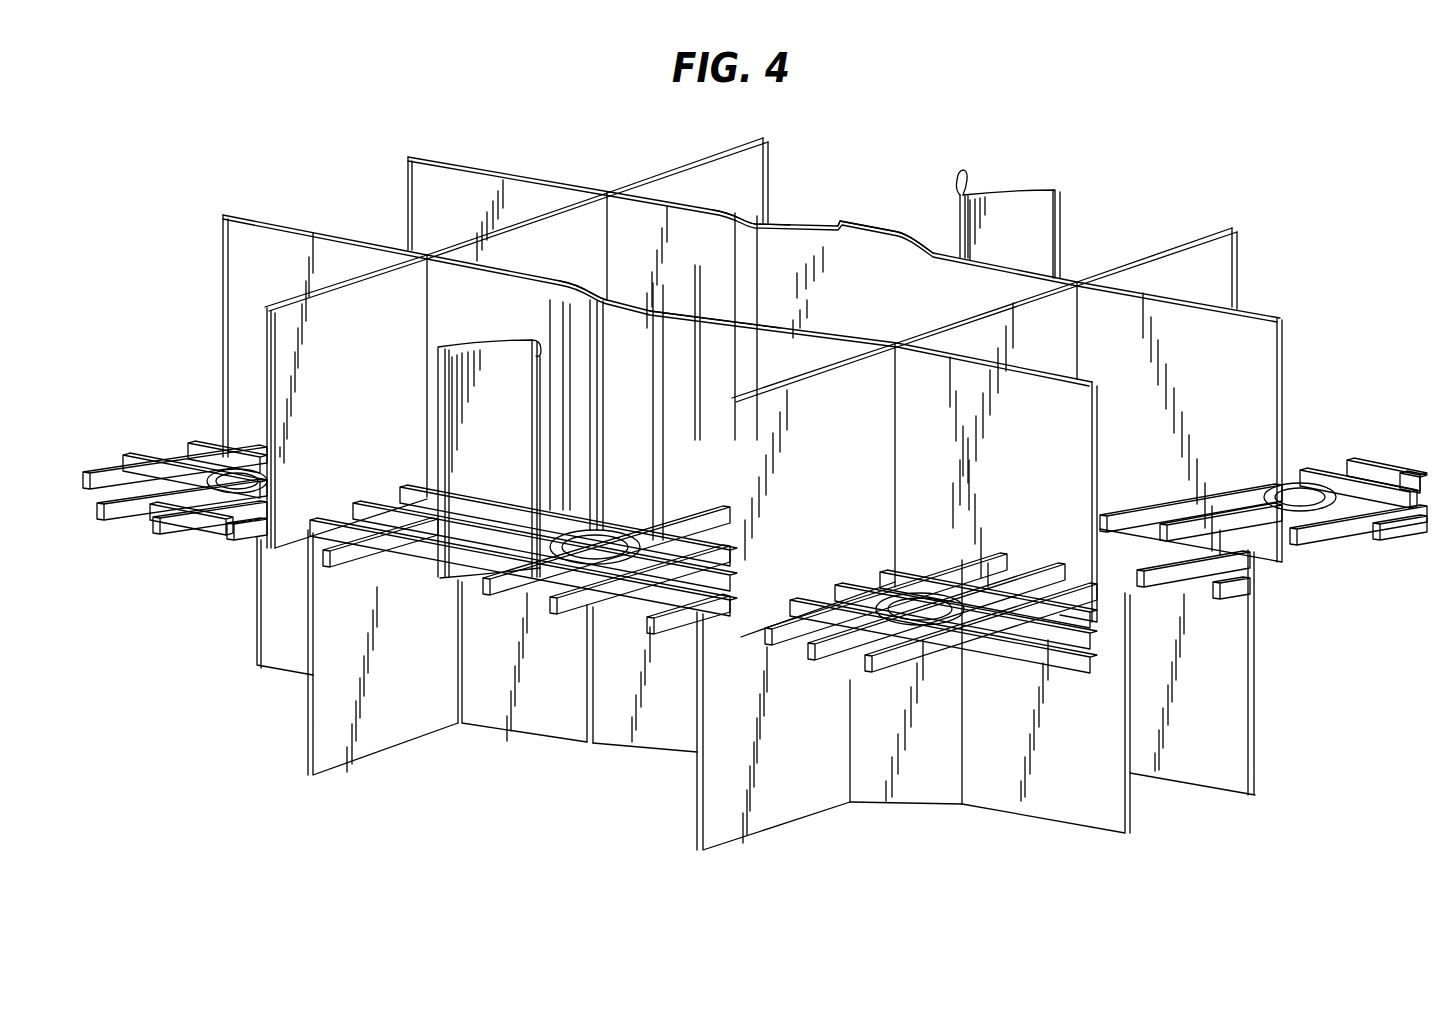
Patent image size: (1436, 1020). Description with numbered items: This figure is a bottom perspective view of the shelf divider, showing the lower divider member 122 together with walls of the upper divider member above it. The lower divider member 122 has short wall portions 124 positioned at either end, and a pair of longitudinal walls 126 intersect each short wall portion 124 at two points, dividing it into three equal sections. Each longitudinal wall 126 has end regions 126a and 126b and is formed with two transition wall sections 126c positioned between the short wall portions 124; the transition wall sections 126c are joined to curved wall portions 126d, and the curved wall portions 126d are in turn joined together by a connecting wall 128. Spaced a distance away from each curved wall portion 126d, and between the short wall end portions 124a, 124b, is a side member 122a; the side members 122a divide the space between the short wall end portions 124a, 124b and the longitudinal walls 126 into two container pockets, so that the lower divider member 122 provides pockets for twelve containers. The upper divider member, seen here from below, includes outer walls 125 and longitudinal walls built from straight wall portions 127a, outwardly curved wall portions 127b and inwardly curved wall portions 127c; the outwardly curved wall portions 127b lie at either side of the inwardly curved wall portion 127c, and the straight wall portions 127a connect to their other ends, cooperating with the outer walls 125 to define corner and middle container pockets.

The lower divider member 122 is at (250, 158).
The side member 122a is at (437, 366).
The short wall portion 124 is at (705, 156).
The short wall end portion 124a is at (1238, 250).
The short wall end portion 124b is at (768, 160).
The outer wall 125 is at (307, 777).
The longitudinal wall 126 is at (404, 160).
The end portion of longitudinal panel 126a is at (503, 172).
The curved top edge portion 126b is at (715, 210).
The transition wall section 126c is at (797, 218).
The curved wall portion 126d is at (893, 228).
The straight wall portion 127a is at (275, 673).
The outwardly curved wall portion 127b is at (503, 728).
The inwardly curved wall portion 127c is at (647, 745).
The connecting wall 128 is at (697, 277).